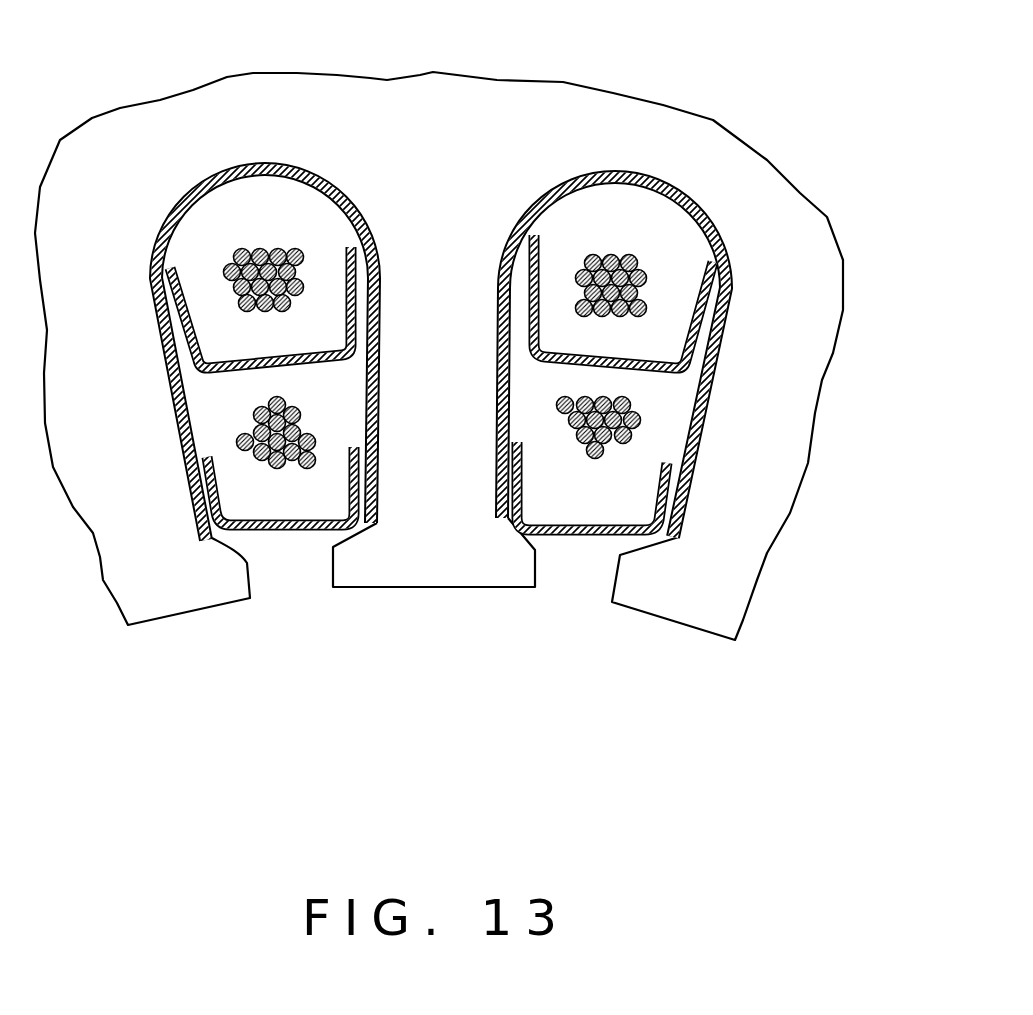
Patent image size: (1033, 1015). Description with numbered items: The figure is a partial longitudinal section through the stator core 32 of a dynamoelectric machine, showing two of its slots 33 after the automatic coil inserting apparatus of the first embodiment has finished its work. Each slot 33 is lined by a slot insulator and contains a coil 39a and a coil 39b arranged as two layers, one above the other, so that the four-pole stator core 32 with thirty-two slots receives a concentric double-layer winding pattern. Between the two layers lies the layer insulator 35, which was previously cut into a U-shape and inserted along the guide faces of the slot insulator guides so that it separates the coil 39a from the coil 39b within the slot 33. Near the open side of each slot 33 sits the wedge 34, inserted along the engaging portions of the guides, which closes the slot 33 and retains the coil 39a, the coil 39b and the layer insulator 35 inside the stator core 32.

The stator core 32 is at (718, 148).
The slot 33 is at (673, 400).
The wedge 34 is at (287, 530).
The layer insulator 35 is at (183, 300).
The coil 39a is at (287, 250).
The coil 39b is at (257, 457).